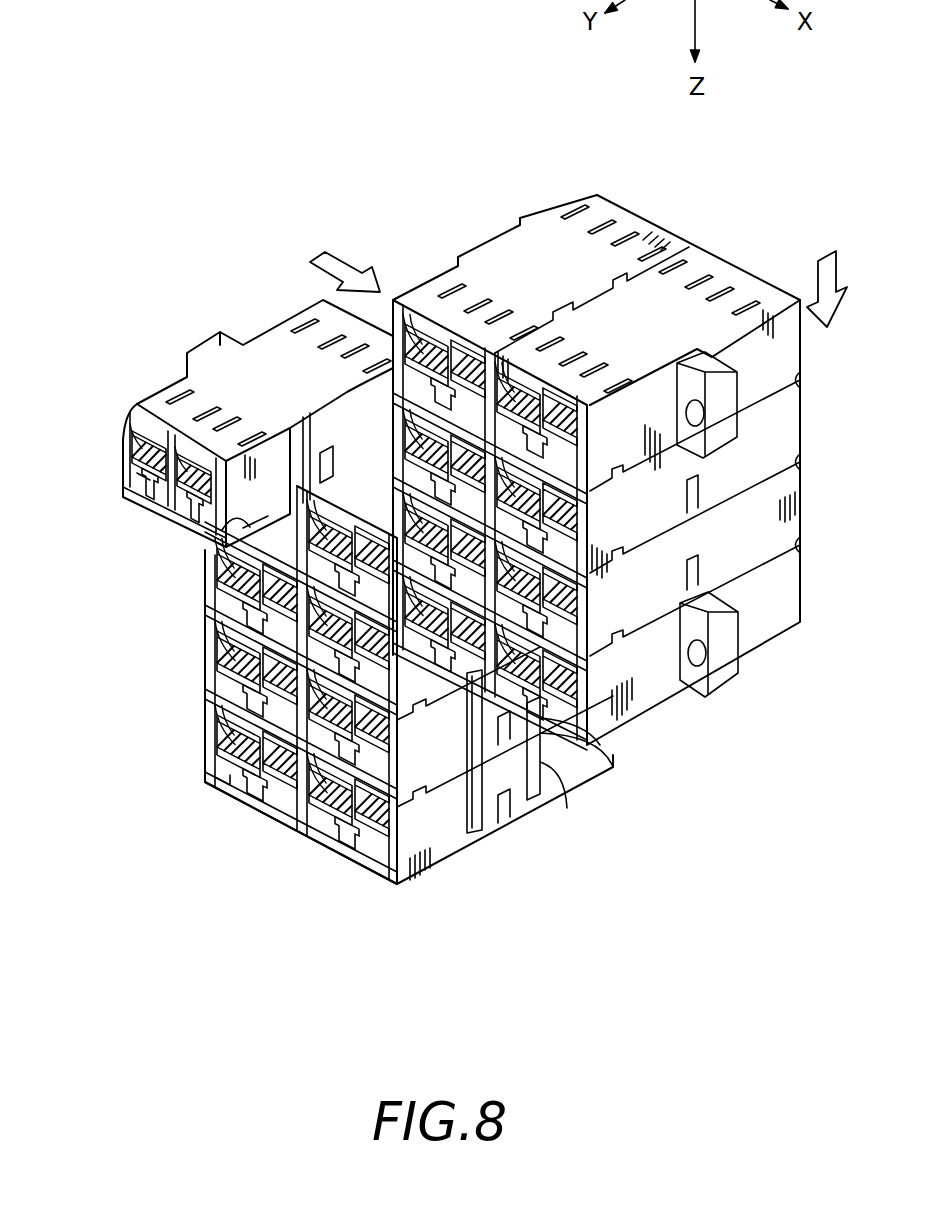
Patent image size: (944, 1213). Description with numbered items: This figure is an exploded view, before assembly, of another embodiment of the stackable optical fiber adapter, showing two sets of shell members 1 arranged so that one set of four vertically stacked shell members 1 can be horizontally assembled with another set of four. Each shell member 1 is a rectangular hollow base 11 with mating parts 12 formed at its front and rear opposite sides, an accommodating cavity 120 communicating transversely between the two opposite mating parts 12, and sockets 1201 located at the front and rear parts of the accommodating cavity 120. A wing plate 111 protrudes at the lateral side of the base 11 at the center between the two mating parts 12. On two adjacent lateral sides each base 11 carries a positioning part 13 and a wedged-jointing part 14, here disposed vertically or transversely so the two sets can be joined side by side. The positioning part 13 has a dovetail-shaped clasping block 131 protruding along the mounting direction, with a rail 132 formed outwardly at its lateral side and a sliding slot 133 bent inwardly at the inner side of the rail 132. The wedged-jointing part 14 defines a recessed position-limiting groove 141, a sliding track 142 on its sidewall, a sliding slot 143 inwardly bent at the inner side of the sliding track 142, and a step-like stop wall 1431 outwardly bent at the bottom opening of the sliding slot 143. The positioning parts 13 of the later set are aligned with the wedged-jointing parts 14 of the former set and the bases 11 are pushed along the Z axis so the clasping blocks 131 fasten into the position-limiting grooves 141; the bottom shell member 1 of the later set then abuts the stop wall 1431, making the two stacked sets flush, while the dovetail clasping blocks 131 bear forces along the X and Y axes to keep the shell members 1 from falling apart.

The shell member 1 is at (615, 187).
The base 11 is at (627, 222).
The wing plate 111 is at (524, 228).
The mating part 12 is at (212, 745).
The accommodating cavity 120 is at (240, 775).
The socket 1201 is at (212, 772).
The positioning part 13 is at (130, 668).
The clasping block 131 is at (240, 585).
The rail 132 is at (245, 612).
The sliding slot 133 is at (245, 640).
The wedged-jointing part 14 is at (130, 568).
The position-limiting groove 141 is at (137, 505).
The sliding track 142 is at (252, 529).
The sliding slot 143 is at (243, 528).
The stop wall 1431 is at (137, 473).